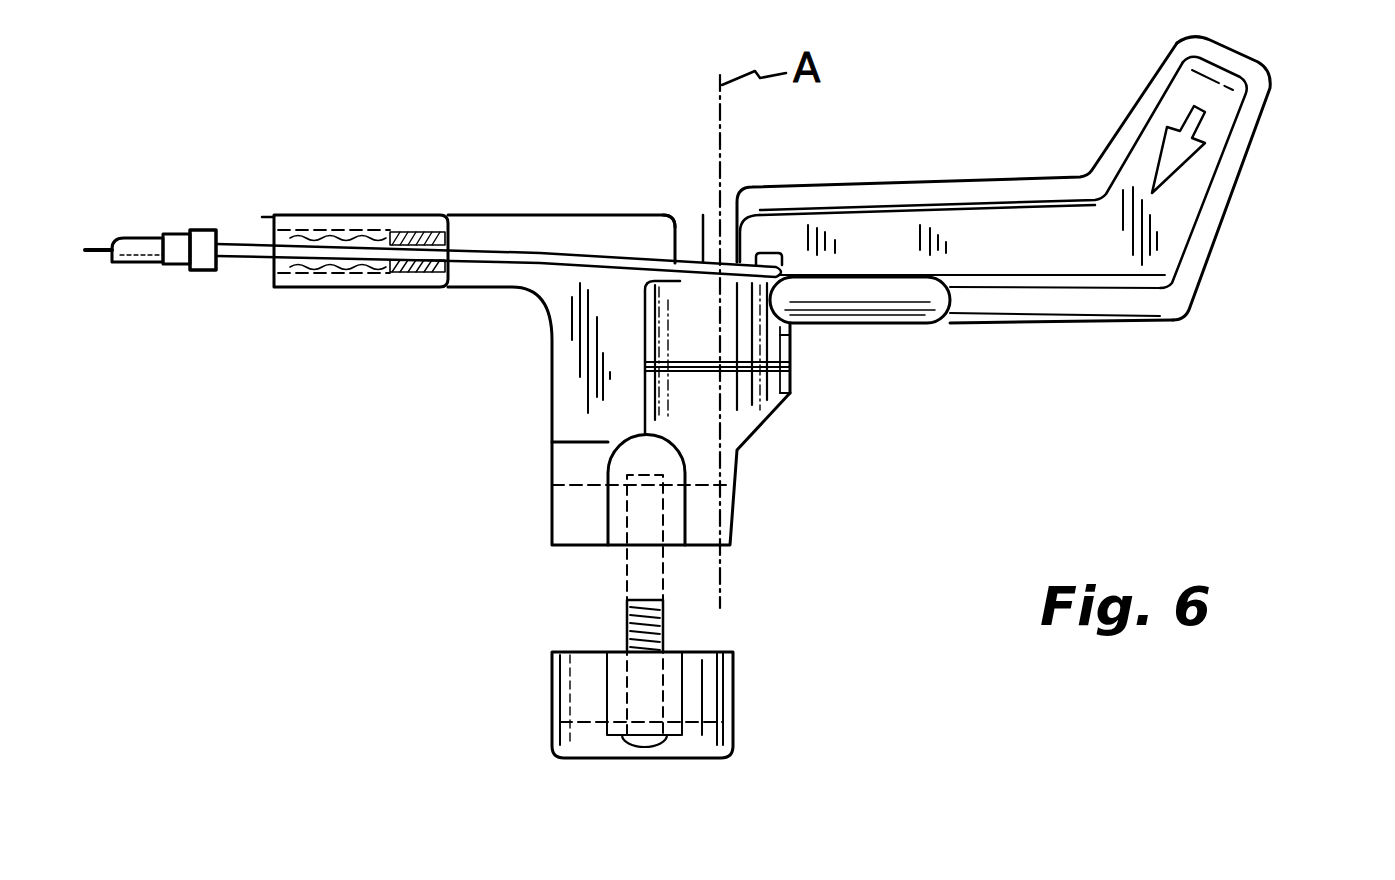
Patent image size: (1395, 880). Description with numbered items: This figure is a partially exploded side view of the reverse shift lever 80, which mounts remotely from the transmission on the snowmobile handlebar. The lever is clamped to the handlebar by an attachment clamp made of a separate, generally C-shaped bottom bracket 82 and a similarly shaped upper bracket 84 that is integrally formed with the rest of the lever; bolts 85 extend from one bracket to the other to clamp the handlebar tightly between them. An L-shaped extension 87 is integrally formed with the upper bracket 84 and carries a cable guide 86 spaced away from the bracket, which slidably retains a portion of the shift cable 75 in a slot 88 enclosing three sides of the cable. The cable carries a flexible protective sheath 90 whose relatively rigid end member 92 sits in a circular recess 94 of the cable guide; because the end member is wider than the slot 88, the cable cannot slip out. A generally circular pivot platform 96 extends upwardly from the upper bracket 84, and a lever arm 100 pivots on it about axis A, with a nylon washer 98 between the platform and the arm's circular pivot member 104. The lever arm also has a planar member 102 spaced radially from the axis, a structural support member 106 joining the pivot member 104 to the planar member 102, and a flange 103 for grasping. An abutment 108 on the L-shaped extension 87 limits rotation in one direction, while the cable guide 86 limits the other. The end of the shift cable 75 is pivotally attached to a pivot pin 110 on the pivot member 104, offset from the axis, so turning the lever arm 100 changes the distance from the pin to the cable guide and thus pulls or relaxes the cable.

The shift cable 75 is at (105, 250).
The control assembly 80 is at (303, 437).
The bottom bracket 82 is at (733, 683).
The upper bracket 84 is at (552, 522).
The bolts 85 is at (627, 626).
The cable guide 86 is at (415, 220).
The L-shaped extension 87 is at (557, 222).
The slot 88 is at (415, 268).
The flexible protective sheath 90 is at (140, 237).
The rigid end member 92 is at (214, 236).
The circular recess 94 is at (322, 281).
The pivot platform 96 is at (790, 393).
The nylon washer 98 is at (790, 366).
The lever arm 100 is at (875, 185).
The planar member 102 is at (973, 220).
The flange 103 is at (1223, 97).
The pivot member 104 is at (790, 338).
The structural support member 106 is at (950, 325).
The abutment 108 is at (703, 215).
The pivot pin 110 is at (760, 253).